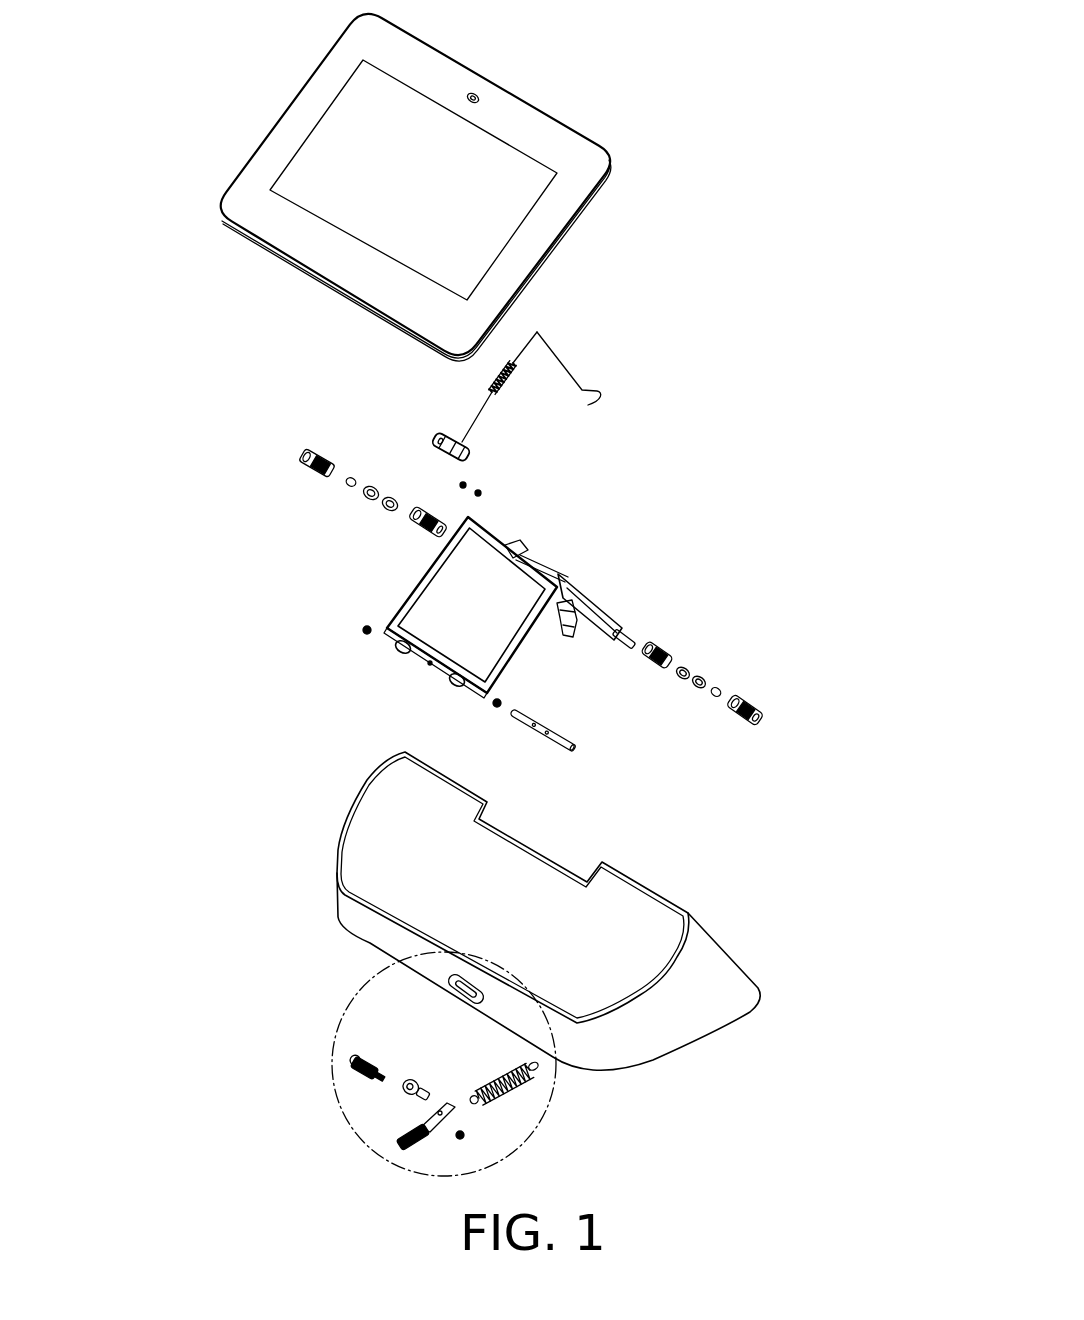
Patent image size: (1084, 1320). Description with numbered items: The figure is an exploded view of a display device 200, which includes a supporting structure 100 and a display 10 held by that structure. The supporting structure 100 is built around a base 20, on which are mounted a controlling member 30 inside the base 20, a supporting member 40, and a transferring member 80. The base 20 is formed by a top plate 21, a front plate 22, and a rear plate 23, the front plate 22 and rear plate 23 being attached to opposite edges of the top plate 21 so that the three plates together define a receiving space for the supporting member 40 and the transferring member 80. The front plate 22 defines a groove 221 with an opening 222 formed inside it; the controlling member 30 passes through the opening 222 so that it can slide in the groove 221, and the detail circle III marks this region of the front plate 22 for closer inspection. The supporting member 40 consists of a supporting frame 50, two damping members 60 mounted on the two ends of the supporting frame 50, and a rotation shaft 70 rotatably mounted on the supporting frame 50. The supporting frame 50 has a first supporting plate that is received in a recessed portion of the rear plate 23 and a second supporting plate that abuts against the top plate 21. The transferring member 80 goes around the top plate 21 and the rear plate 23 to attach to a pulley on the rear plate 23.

The display device 200 is at (651, 99).
The display 10 is at (530, 118).
The supporting structure 100 is at (217, 583).
The transferring member 80 is at (562, 362).
The supporting member 40 is at (884, 712).
The supporting frame 50 is at (527, 600).
The damping members 60 is at (718, 673).
The rotation shaft 70 is at (577, 742).
The base 20 is at (282, 683).
The top plate 21 is at (373, 822).
The front plate 22 is at (358, 918).
The rear plate 23 is at (447, 770).
The groove 221 is at (477, 1002).
The opening 222 is at (470, 990).
The controlling member 30 is at (393, 1110).
The detail view circle III is at (523, 1140).